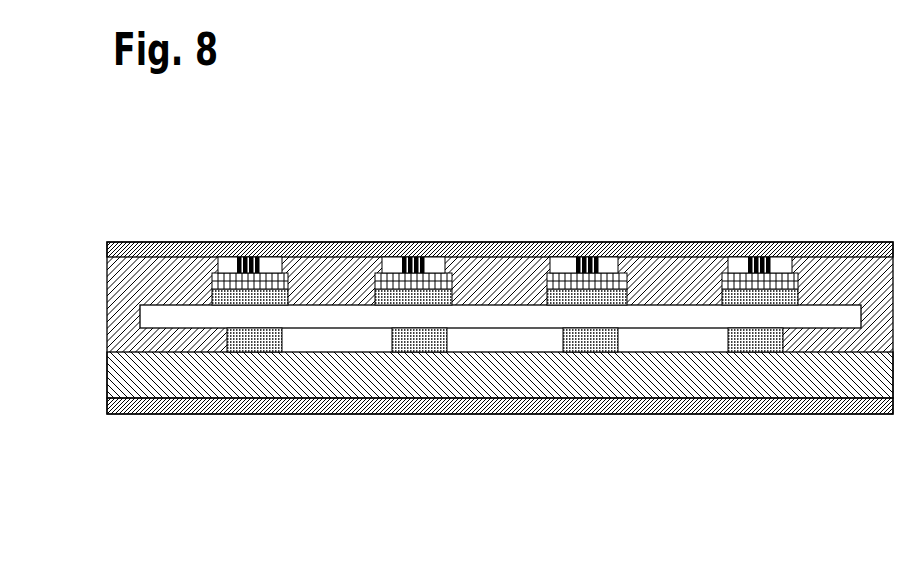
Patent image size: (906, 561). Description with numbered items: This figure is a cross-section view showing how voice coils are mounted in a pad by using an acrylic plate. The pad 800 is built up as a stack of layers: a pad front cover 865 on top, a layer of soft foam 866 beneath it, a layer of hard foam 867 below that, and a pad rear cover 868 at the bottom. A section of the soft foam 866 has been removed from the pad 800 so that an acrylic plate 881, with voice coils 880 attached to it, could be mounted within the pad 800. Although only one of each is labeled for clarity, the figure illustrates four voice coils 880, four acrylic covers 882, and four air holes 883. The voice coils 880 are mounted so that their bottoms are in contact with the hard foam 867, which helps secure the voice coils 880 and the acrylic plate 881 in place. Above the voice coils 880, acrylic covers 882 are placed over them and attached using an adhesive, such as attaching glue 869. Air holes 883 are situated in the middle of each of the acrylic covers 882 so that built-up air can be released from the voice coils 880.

The pad 800 is at (840, 79).
The pad front cover 865 is at (123, 225).
The soft foam 866 is at (459, 270).
The hard foam 867 is at (163, 379).
The pad rear cover 868 is at (123, 430).
The attaching glue 869 is at (642, 278).
The voice coils 880 is at (768, 365).
The acrylic plate 881 is at (517, 342).
The acrylic covers 882 is at (535, 203).
The air holes 883 is at (504, 231).